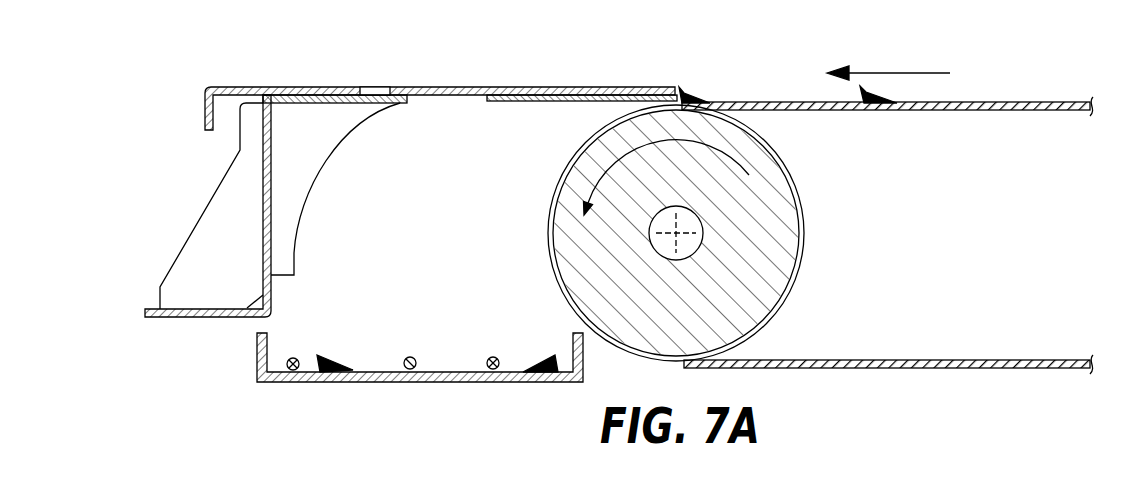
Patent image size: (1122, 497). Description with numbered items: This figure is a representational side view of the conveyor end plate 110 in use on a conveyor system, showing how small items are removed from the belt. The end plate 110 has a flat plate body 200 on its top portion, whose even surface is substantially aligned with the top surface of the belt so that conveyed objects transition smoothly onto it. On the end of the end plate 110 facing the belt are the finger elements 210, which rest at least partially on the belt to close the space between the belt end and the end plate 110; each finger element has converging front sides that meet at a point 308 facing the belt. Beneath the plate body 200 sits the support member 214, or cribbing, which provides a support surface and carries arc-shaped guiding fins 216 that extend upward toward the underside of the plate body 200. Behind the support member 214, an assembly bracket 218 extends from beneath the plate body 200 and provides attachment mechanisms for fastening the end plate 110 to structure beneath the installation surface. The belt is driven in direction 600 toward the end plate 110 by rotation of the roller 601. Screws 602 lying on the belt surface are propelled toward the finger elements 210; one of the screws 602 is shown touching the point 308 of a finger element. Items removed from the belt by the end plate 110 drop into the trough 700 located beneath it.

The conveyor end plate 110 is at (512, 52).
The plate body 200 is at (253, 86).
The plurality of finger elements 210 is at (686, 68).
The support member 214 is at (218, 308).
The plurality of guiding fins 216 is at (295, 252).
The assembly bracket 218 is at (180, 253).
The point 308 is at (677, 97).
The direction 600 is at (917, 73).
The roller 601 is at (792, 243).
The plurality of screws 602 is at (858, 92).
The trough 700 is at (310, 377).